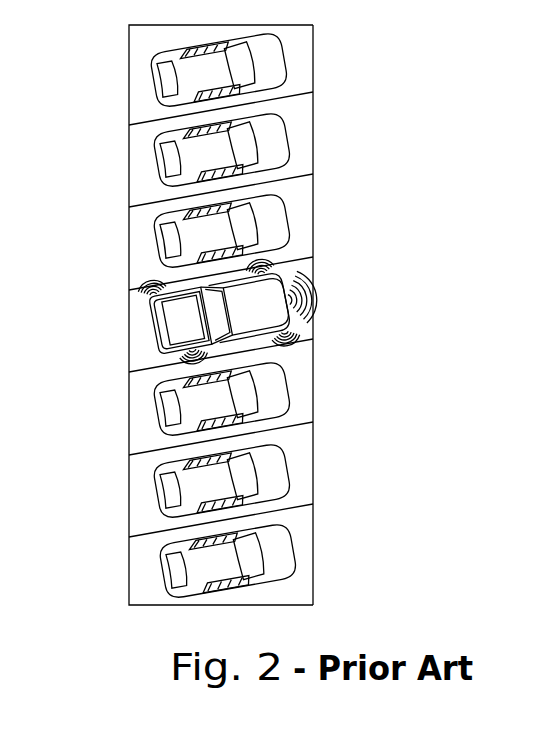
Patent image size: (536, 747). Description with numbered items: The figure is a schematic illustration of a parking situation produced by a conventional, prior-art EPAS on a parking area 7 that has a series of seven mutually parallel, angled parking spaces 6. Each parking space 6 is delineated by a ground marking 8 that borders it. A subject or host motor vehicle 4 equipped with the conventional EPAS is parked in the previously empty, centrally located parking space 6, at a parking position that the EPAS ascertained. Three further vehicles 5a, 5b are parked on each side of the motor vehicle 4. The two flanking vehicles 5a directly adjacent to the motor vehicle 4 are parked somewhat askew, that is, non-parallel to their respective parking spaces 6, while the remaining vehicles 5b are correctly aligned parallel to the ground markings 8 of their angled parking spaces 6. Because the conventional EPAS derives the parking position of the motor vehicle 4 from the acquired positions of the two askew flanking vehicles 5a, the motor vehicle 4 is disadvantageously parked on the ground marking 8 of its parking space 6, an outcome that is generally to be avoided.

The motor vehicle 4 is at (275, 303).
The flanking vehicles 5a is at (165, 228).
The remaining vehicles 5b is at (268, 60).
The parking spaces 6 is at (302, 142).
The parking area 7 is at (318, 215).
The ground marking 8 is at (300, 448).